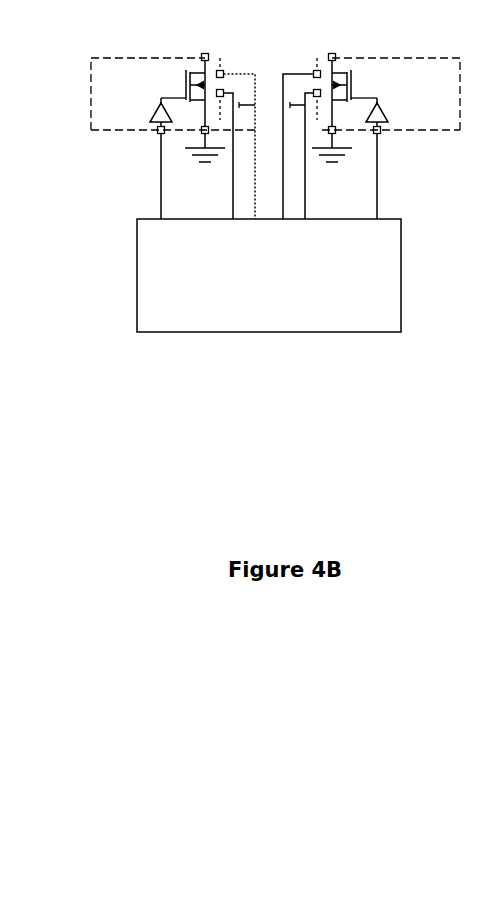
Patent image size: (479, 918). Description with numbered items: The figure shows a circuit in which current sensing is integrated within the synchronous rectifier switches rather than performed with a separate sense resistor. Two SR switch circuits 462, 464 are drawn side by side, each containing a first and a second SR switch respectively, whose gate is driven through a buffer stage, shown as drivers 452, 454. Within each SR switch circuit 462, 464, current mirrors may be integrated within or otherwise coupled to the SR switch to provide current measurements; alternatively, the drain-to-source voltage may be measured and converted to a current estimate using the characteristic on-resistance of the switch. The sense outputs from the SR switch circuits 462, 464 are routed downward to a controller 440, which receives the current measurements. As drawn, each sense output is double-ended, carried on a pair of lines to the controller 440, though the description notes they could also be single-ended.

The SR switch circuit 462 is at (173, 121).
The SR switch circuit 464 is at (371, 121).
The first driver 452 is at (147, 158).
The second driver 454 is at (391, 158).
The controller 440 is at (268, 295).